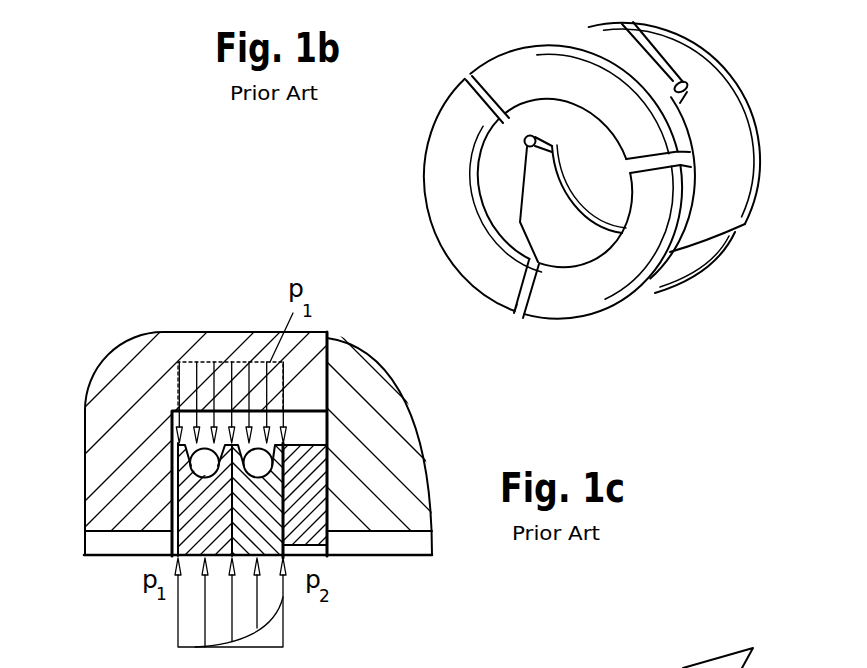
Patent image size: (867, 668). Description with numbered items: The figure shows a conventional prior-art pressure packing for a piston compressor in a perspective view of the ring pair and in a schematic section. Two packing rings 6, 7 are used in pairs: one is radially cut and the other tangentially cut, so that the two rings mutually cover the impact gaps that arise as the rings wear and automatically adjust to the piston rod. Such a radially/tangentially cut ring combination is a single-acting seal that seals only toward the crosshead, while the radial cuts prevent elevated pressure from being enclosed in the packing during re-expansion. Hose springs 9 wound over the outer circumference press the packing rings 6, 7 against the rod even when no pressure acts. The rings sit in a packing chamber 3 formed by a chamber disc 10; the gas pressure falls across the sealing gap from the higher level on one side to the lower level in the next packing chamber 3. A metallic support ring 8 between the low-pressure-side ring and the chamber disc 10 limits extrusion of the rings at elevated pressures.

In FIG. 1C, the packing chamber 3 is at (302, 427).
In FIG. 1B, the packing ring 6 is at (453, 182).
In FIG. 1C, the packing ring 6 is at (203, 510).
In FIG. 1B, the packing ring 7 is at (727, 185).
In FIG. 1C, the packing ring 7 is at (283, 527).
In FIG. 1C, the support ring 8 is at (328, 445).
In FIG. 1C, the hose spring 9 is at (207, 462).
In FIG. 1C, the chamber disc 10 is at (142, 377).